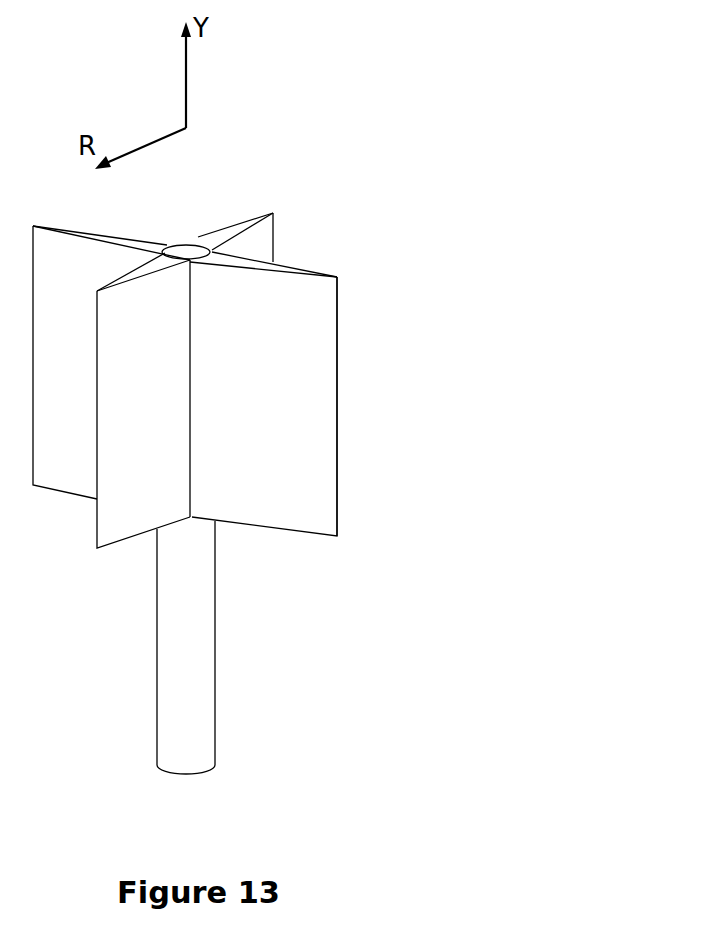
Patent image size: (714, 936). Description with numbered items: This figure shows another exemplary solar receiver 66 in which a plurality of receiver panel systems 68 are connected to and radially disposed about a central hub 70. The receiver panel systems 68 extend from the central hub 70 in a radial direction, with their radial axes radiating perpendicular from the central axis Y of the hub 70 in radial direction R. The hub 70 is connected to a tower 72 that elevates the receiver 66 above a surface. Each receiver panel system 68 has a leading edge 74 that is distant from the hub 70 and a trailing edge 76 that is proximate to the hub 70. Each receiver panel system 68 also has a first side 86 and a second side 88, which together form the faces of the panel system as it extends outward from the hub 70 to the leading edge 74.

The receiver 66 is at (351, 156).
The receiver panel systems 68 is at (362, 318).
The central hub 70 is at (193, 252).
The tower 72 is at (215, 692).
The leading edge 74 is at (338, 497).
The trailing edge 76 is at (173, 245).
The first side 86 is at (306, 379).
The second side 88 is at (310, 273).